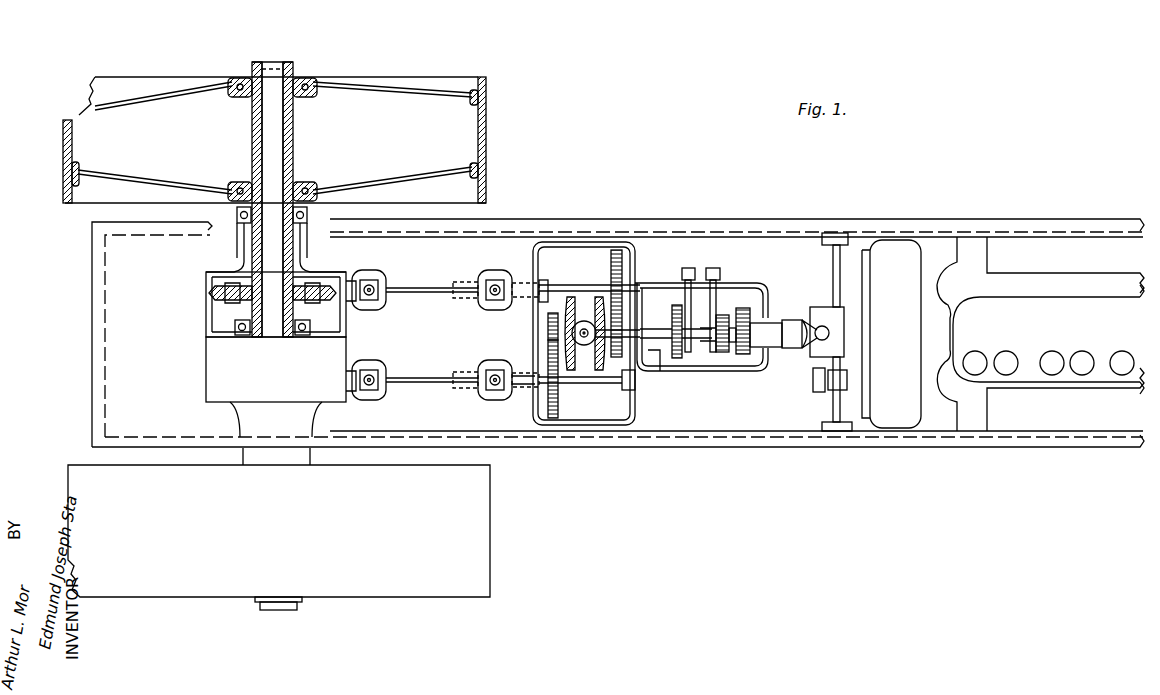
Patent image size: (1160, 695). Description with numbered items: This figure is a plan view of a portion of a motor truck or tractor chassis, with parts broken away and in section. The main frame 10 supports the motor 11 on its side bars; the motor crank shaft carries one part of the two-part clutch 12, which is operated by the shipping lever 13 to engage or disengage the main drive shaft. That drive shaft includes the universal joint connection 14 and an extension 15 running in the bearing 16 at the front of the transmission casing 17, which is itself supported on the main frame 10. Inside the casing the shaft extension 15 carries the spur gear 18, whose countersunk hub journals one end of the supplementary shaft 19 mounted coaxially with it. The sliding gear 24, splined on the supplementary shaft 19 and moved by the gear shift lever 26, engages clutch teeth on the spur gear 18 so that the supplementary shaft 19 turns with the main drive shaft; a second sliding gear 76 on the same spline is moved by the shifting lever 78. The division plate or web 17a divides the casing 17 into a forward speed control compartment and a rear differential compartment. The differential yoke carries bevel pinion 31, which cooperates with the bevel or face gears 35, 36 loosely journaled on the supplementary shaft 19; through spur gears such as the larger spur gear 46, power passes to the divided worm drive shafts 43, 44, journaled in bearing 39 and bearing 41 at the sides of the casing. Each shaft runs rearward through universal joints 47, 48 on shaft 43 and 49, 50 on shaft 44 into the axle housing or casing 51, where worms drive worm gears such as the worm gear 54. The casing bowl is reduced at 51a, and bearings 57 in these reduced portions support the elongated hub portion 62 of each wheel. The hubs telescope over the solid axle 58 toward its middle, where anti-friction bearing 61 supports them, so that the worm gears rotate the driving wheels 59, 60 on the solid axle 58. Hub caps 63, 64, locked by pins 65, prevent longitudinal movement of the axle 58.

The main frame 10 is at (90, 300).
The motor 11 is at (1035, 375).
The two-part clutch 12 is at (891, 334).
The shipping lever 13 is at (813, 381).
The universal joint connection 14 is at (794, 321).
The main drive shaft extension 15 is at (782, 346).
The bearing 16 is at (770, 322).
The transmission casing 17 is at (653, 283).
The division plate or web 17a is at (655, 359).
The spur gear 18 is at (746, 310).
The supplementary shaft 19 is at (660, 336).
The sliding gear 24 is at (724, 342).
The gear shift lever 26 is at (716, 290).
The bevel pinion 31 is at (585, 320).
The bevel or face gear 35 is at (556, 317).
The bevel or face gear 36 is at (614, 311).
The bearing 39 is at (535, 280).
The bearing 41 is at (520, 393).
The worm drive shaft 43 is at (435, 293).
The worm drive shaft 44 is at (432, 380).
The spur gear 46 is at (559, 406).
The universal joint 47 is at (382, 276).
The universal joint 48 is at (480, 272).
The universal joint 49 is at (380, 365).
The universal joint 50 is at (480, 366).
The axle housing or casing 51 is at (215, 356).
The reduced portion of axle casing 51a is at (237, 216).
The worm gear 54 is at (312, 282).
The bearing 57 is at (308, 216).
The solid axle 58 is at (278, 124).
The driving wheel 59 is at (364, 75).
The driving wheel 60 is at (448, 584).
The anti-friction bearing 61 is at (292, 337).
The elongated hub portion 62 is at (252, 126).
The hub cap 63 is at (289, 62).
The hub cap 64 is at (292, 611).
The pin 65 is at (272, 60).
The sliding gear 76 is at (699, 349).
The shifting lever 78 is at (680, 306).